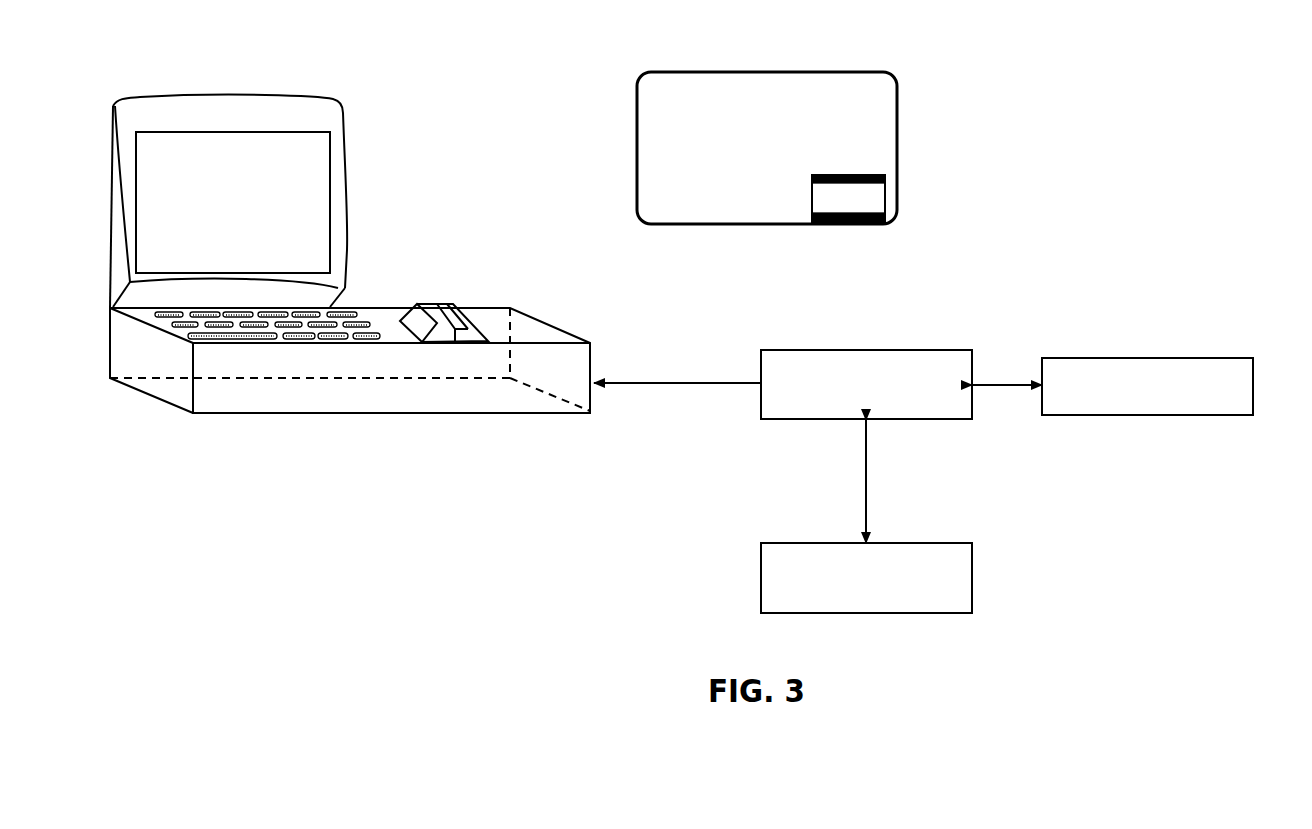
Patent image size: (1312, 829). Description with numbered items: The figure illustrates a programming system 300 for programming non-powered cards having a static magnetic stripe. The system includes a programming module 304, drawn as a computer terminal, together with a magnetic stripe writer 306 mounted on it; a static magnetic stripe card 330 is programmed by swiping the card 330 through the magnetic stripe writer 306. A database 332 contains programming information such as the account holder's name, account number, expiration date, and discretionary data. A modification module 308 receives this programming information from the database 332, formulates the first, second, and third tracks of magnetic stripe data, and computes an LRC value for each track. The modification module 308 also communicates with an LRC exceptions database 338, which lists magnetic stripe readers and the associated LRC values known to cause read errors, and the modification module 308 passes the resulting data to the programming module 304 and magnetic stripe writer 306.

The programming system 300 is at (1269, 231).
The programming module 304 is at (112, 358).
The magnetic stripe writer 306 is at (453, 305).
The modification module 308 is at (788, 420).
The static magnetic stripe card 330 is at (852, 72).
The database 332 is at (935, 613).
The LRC exceptions database 338 is at (1098, 357).